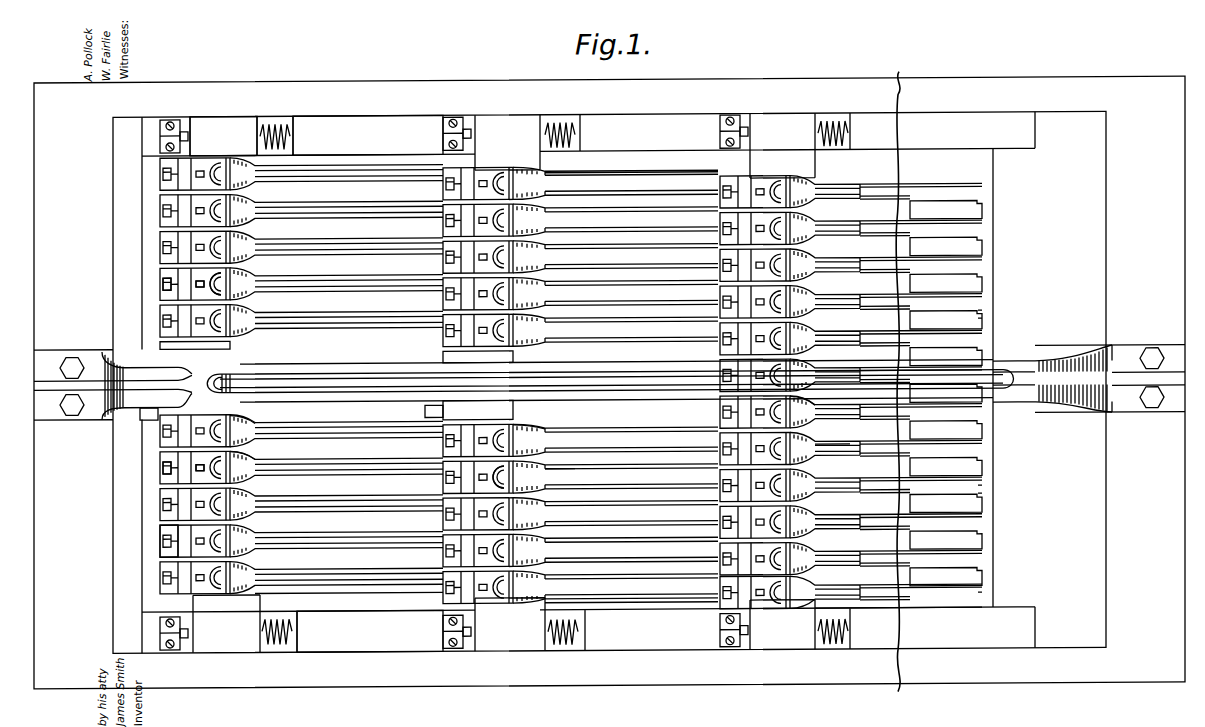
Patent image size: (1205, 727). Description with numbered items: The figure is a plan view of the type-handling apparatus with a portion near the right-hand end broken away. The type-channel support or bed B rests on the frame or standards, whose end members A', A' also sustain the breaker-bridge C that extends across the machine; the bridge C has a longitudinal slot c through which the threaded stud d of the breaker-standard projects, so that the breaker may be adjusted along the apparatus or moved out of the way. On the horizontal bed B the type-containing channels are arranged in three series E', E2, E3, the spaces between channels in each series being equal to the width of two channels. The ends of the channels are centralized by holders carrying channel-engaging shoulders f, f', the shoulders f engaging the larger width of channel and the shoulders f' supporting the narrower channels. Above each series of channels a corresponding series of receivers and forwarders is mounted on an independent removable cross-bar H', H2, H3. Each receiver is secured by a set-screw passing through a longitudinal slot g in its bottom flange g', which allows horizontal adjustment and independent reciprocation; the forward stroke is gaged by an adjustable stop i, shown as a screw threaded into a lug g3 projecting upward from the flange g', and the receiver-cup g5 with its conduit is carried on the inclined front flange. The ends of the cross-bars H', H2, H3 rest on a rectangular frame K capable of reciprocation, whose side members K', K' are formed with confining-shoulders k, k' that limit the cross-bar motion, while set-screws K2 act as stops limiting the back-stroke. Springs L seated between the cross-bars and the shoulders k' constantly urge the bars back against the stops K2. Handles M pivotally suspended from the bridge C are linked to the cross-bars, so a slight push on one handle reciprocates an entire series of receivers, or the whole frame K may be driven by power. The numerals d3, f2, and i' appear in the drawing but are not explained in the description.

The end member A' is at (609, 382).
The type-channel support or bed B is at (678, 380).
The breaker-bridge C is at (617, 380).
The longitudinal slot c is at (416, 381).
The threaded stud d is at (557, 472).
The finger bar d3 is at (822, 445).
The first series of type-containing channels E' is at (349, 531).
The second series of type-containing channels E2 is at (631, 538).
The third series of type-containing channels E3 is at (898, 526).
The channel-engaging shoulder f is at (975, 452).
The channel-engaging shoulder f' is at (964, 386).
The finger tip f2 is at (967, 593).
The longitudinal slot g is at (173, 281).
The bottom flange g' is at (245, 458).
The lug g3 is at (178, 466).
The receiver-cup g5 is at (522, 424).
The cross-bar H' is at (225, 384).
The cross-bar H2 is at (510, 383).
The cross-bar H3 is at (782, 381).
The adjustable stop i is at (466, 396).
The set screw i' is at (474, 418).
The confining-shoulder k is at (485, 384).
The confining-shoulder k' is at (491, 479).
The rectangular frame K is at (157, 542).
The side member K' is at (368, 383).
The set-screw K2 is at (436, 383).
The spring L is at (838, 625).
The handle M is at (631, 251).